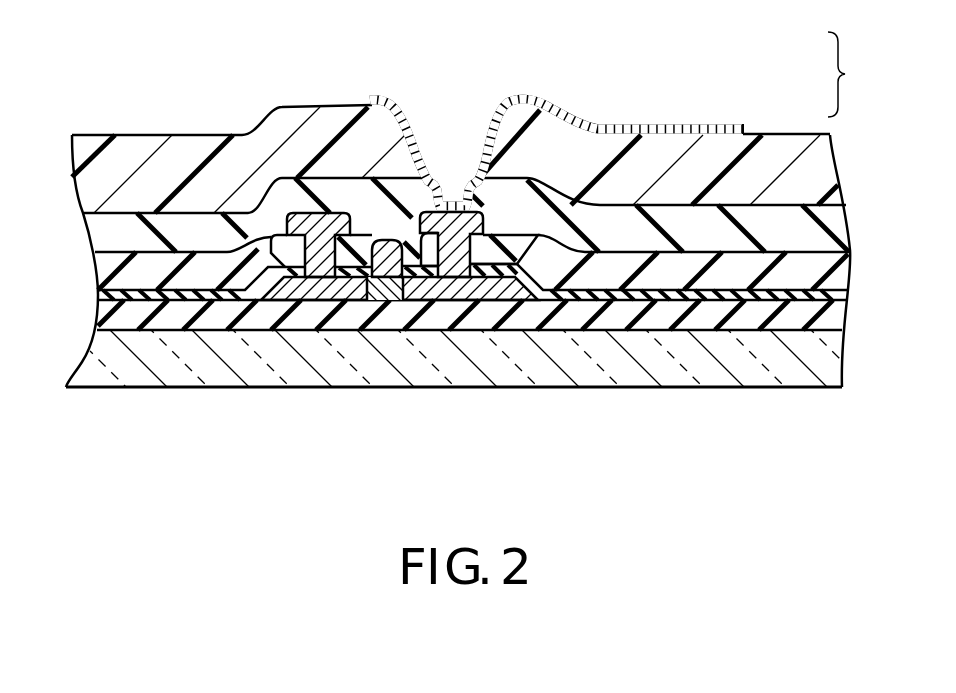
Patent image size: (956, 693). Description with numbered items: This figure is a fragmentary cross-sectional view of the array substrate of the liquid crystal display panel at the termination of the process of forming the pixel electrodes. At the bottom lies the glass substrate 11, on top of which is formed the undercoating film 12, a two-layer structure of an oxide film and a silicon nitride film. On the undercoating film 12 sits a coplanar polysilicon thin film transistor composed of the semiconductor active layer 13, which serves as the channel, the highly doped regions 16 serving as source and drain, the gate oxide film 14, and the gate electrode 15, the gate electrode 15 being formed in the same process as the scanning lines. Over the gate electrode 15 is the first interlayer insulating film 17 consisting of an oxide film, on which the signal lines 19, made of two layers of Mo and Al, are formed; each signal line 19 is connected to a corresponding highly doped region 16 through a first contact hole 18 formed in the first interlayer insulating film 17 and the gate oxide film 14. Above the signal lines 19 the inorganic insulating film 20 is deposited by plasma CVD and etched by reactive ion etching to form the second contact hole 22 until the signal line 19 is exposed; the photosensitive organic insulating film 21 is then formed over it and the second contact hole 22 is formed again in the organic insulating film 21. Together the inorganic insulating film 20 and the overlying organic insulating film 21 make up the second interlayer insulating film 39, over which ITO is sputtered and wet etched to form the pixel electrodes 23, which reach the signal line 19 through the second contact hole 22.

The glass substrate 11 is at (206, 382).
The undercoating film 12 is at (313, 319).
The semiconductor active layer 13 is at (374, 298).
The gate oxide film 14 is at (613, 294).
The gate electrode 15 is at (383, 247).
The highly doped regions 16 is at (484, 293).
The first interlayer insulating film 17 is at (696, 281).
The first contact hole 18 is at (499, 234).
The signal lines 19 is at (482, 228).
The inorganic insulating film 20 is at (773, 223).
The organic insulating film 21 is at (757, 155).
The second contact hole 22 is at (454, 172).
The pixel electrodes 23 is at (658, 124).
The second interlayer insulating film 39 is at (855, 74).